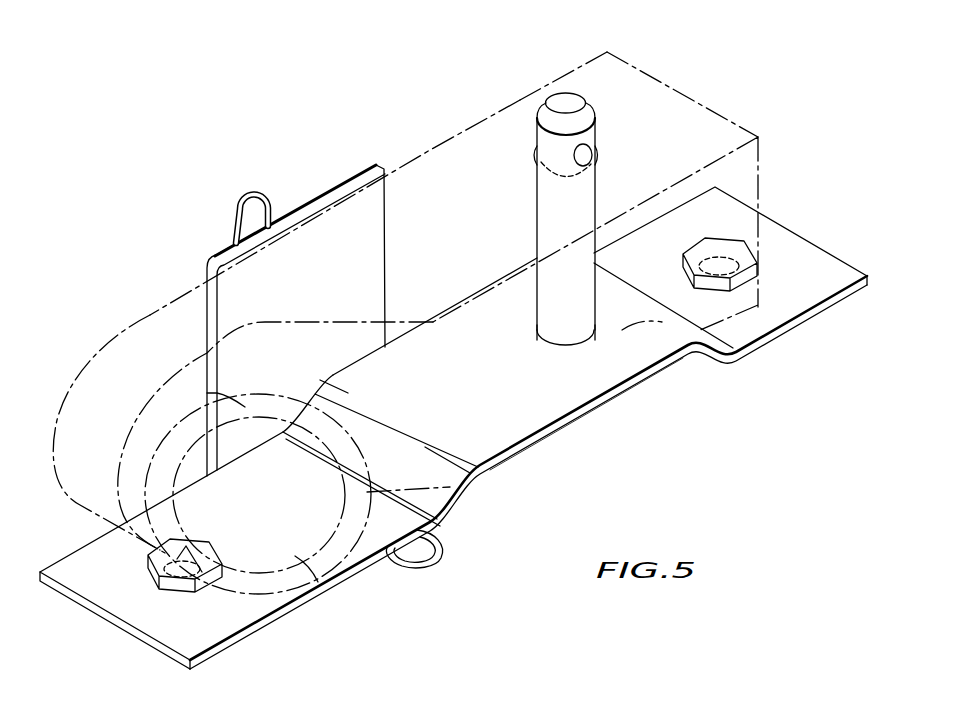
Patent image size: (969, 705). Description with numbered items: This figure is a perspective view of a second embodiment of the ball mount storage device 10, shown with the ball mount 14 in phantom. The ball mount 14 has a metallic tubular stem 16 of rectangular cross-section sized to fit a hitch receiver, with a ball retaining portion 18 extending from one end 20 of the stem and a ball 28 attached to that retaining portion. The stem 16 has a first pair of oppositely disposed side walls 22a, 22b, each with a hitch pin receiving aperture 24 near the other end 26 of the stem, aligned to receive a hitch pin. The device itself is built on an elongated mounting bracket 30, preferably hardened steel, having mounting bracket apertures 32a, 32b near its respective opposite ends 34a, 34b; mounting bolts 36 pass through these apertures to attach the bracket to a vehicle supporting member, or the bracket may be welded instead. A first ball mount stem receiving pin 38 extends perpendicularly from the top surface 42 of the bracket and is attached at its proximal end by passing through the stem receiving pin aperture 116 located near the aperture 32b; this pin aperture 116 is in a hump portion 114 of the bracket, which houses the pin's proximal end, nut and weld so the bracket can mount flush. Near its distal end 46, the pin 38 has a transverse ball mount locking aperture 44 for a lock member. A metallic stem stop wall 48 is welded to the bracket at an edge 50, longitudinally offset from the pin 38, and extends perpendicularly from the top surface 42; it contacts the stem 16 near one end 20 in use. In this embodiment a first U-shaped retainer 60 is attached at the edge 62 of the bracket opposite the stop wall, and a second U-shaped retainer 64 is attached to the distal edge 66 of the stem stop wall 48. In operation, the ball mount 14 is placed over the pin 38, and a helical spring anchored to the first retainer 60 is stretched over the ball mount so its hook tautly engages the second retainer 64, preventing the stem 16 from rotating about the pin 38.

The ball mount storage device 10 is at (834, 213).
The ball mount 14 is at (710, 102).
The tubular stem 16 is at (428, 146).
The ball retaining portion 18 is at (133, 313).
The one end of the tubular stem 20 is at (402, 322).
The stem side wall 22a is at (662, 78).
The stem side wall 22b is at (625, 327).
The hitch pin receiving aperture 24 is at (536, 140).
The other end of the stem 26 is at (585, 50).
The ball 28 is at (327, 597).
The mounting bracket 30 is at (755, 343).
The mounting bracket aperture 32a is at (200, 540).
The mounting bracket aperture 32b is at (758, 262).
The end of the mounting bracket 34a is at (183, 627).
The end of the mounting bracket 34b is at (796, 300).
The mounting bolt 36 is at (150, 578).
The first ball mount stem receiving pin 38 is at (553, 98).
The top surface of the mounting bracket 42 is at (548, 346).
The ball mount locking aperture 44 is at (597, 154).
The distal end of the receiving pin 46 is at (544, 170).
The stem stop wall 48 is at (305, 204).
The edge of the mounting bracket 50 is at (86, 544).
The first U-shaped retainer 60 is at (430, 571).
The edge of the mounting bracket 62 is at (501, 463).
The second U-shaped retainer 64 is at (246, 200).
The distal edge of the stem stop wall 66 is at (360, 162).
The hump portion 114 is at (552, 442).
The stem receiving pin aperture 116 is at (540, 332).